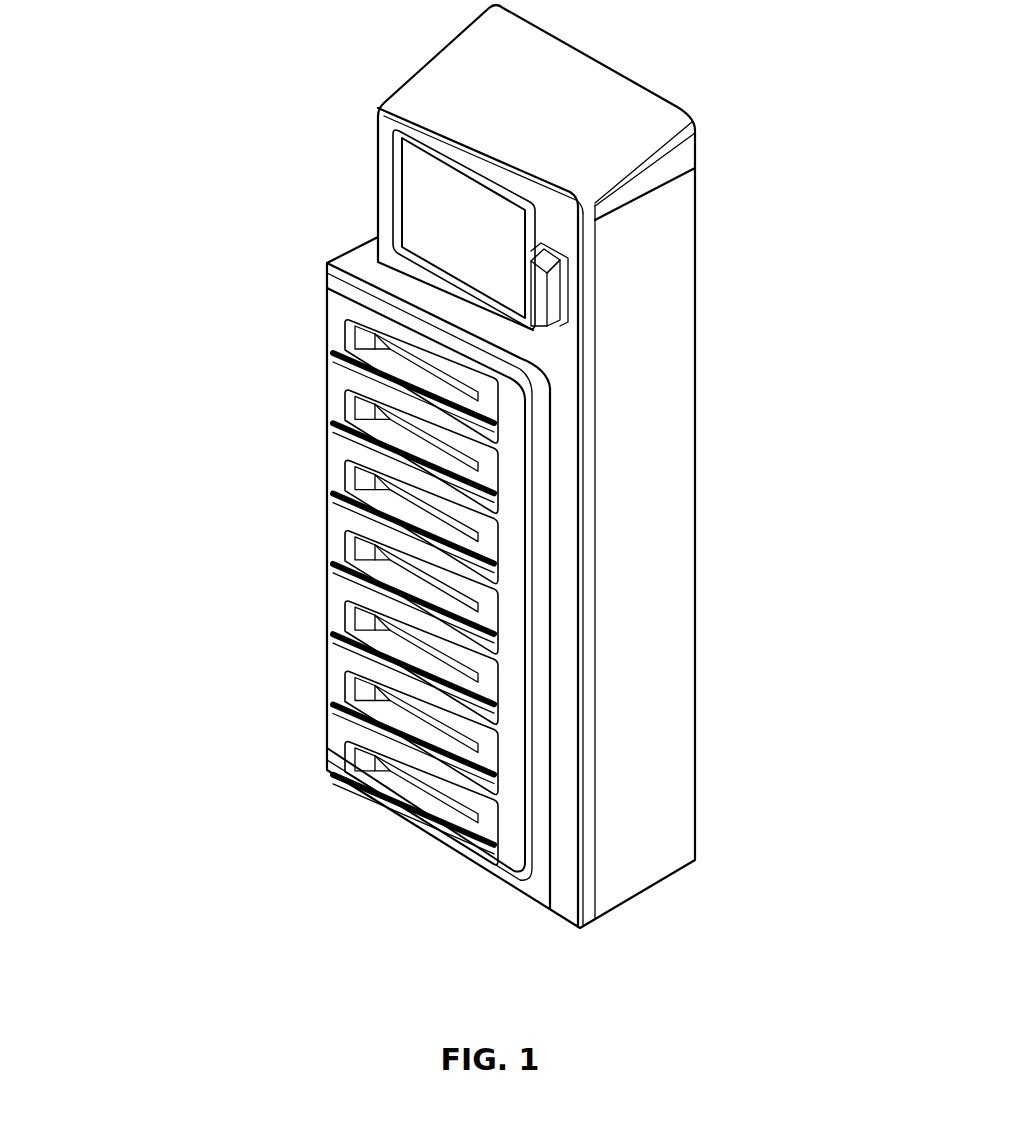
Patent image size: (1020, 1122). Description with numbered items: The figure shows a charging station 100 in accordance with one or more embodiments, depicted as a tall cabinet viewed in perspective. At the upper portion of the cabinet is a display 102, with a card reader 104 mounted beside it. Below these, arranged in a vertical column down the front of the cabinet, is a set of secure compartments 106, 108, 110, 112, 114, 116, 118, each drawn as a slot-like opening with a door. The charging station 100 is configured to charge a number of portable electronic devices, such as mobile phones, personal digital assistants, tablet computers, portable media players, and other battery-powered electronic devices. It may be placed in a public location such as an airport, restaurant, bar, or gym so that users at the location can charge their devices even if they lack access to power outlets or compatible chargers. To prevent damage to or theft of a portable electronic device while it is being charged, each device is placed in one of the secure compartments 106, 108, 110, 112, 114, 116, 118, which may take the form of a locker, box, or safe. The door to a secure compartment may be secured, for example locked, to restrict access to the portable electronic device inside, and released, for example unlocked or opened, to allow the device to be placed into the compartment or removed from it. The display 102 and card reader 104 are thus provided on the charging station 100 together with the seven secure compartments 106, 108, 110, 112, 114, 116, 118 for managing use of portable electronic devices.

The charging station 100 is at (511, 466).
The display 102 is at (437, 247).
The card reader 104 is at (557, 310).
The secure compartment 106 is at (337, 301).
The secure compartment 108 is at (337, 371).
The secure compartment 110 is at (337, 441).
The secure compartment 112 is at (337, 511).
The secure compartment 114 is at (337, 581).
The secure compartment 116 is at (337, 652).
The secure compartment 118 is at (337, 724).